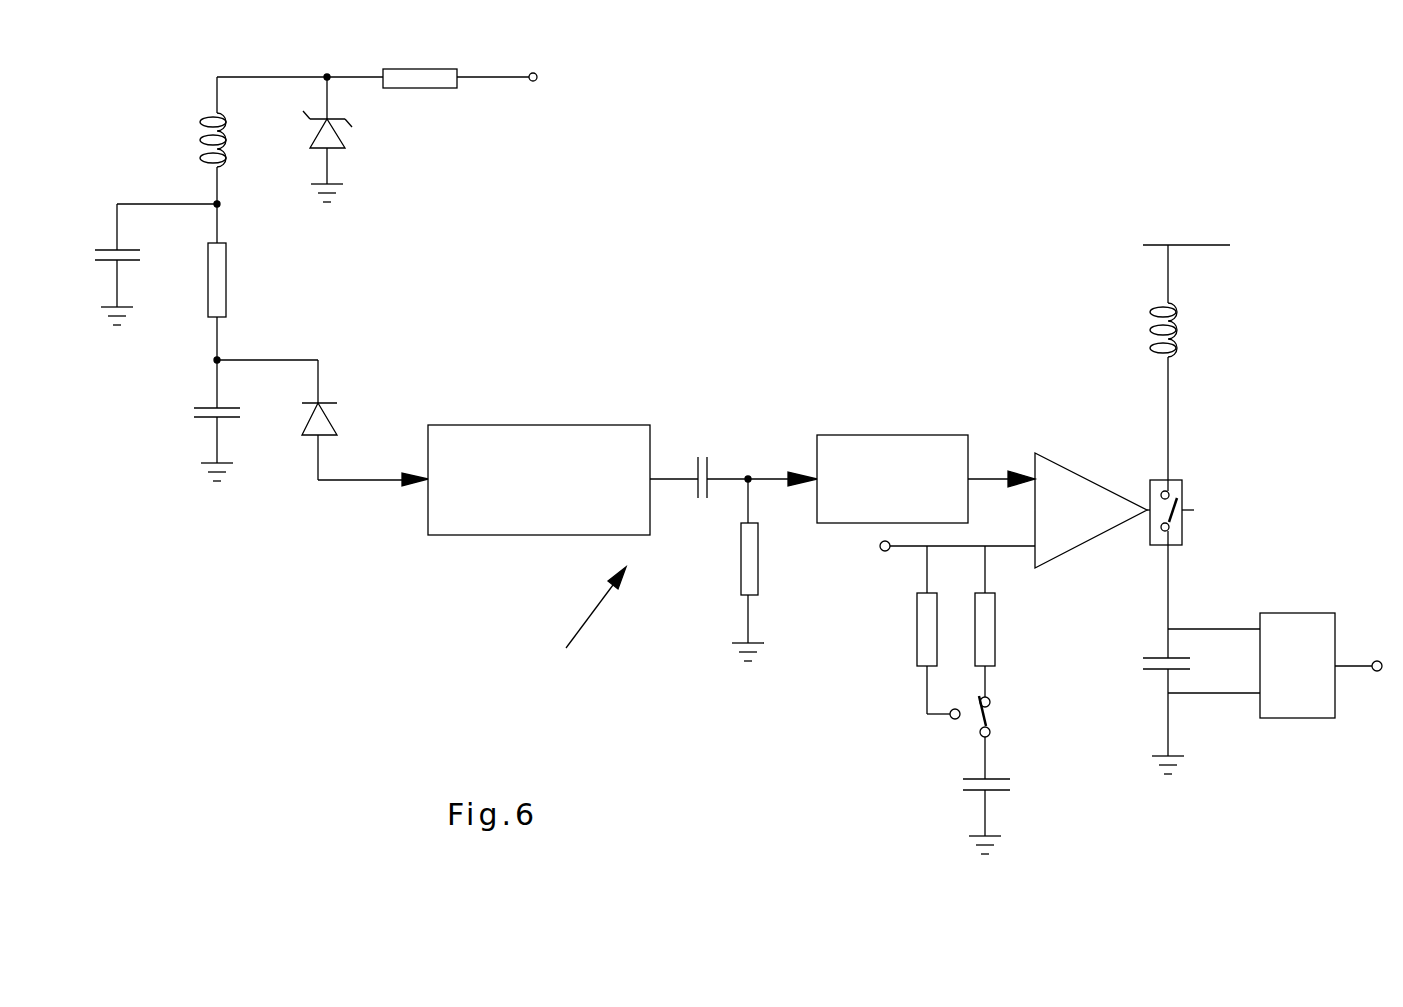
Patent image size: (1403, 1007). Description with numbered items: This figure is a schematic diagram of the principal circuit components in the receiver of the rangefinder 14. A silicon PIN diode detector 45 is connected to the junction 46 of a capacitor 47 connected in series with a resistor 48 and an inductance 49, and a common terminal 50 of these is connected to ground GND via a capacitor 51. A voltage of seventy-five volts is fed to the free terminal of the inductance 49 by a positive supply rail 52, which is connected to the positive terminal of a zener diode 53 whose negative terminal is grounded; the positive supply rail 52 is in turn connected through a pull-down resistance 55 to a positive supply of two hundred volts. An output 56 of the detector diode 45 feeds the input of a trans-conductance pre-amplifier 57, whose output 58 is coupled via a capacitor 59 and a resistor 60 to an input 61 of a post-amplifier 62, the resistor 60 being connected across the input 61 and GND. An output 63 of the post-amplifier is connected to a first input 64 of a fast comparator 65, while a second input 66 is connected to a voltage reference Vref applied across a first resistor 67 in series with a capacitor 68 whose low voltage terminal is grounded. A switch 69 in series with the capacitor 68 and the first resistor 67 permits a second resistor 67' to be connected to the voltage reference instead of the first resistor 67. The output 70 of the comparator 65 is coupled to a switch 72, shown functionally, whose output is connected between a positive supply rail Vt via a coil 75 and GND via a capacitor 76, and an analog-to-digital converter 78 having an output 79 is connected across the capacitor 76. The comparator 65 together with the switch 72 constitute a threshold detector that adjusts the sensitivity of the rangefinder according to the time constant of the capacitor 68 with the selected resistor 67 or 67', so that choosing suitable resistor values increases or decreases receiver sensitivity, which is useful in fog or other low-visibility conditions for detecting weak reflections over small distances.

The rangefinder 14 is at (580, 621).
The silicon PIN diode detector 45 is at (333, 420).
The junction 46 is at (219, 358).
The capacitor 47 is at (190, 419).
The resistor 48 is at (227, 270).
The inductance 49 is at (199, 137).
The common terminal 50 is at (220, 204).
The capacitor 51 is at (130, 245).
The positive supply rail 52 is at (260, 75).
The zener diode 53 is at (346, 143).
The pull-down resistance 55 is at (413, 66).
The output 56 is at (370, 481).
The trans-conductance pre-amplifier 57 is at (513, 423).
The output 58 is at (668, 477).
The capacitor 59 is at (695, 491).
The resistor 60 is at (759, 565).
The input 61 is at (749, 477).
The post-amplifier 62 is at (880, 433).
The output 63 is at (990, 477).
The first input 64 is at (1033, 483).
The fast comparator 65 is at (1092, 479).
The second input 66 is at (1033, 550).
The first resistor 67 is at (1013, 621).
The second resistor 67' is at (910, 632).
The capacitor 68 is at (1000, 777).
The switch 69 is at (956, 738).
The output 70 is at (1143, 515).
The switch 72 is at (1185, 497).
The coil 75 is at (1182, 323).
The capacitor 76 is at (1157, 672).
The analog-to-digital converter 78 is at (1285, 612).
The output 79 is at (1378, 659).